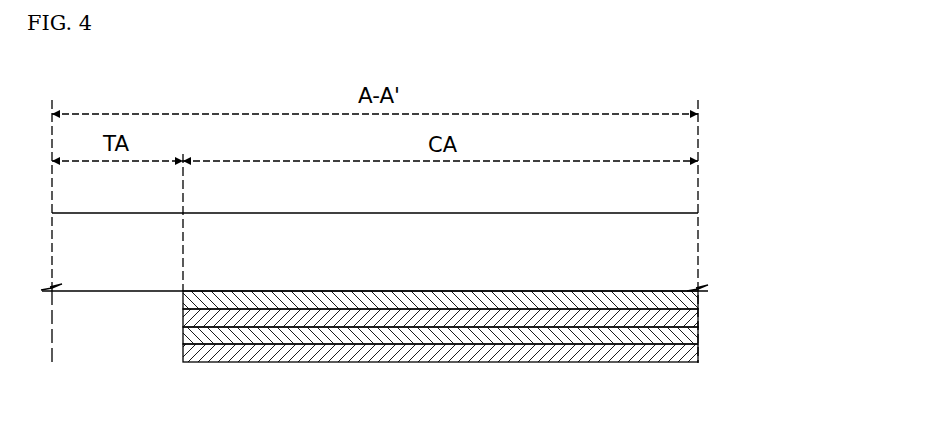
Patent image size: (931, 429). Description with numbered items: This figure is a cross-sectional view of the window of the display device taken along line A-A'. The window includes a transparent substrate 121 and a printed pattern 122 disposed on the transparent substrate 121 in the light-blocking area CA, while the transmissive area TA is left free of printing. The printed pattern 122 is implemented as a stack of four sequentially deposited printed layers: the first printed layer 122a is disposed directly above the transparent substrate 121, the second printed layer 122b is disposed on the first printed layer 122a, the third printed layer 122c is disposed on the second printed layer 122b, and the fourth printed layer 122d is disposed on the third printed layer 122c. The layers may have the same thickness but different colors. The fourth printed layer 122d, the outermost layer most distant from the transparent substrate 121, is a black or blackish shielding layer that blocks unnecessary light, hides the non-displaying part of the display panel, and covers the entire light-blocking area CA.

The transparent substrate 121 is at (688, 251).
The printed pattern 122 is at (514, 342).
The first printed layer 122a is at (692, 301).
The second printed layer 122b is at (692, 320).
The third printed layer 122c is at (692, 338).
The fourth printed layer 122d is at (692, 354).